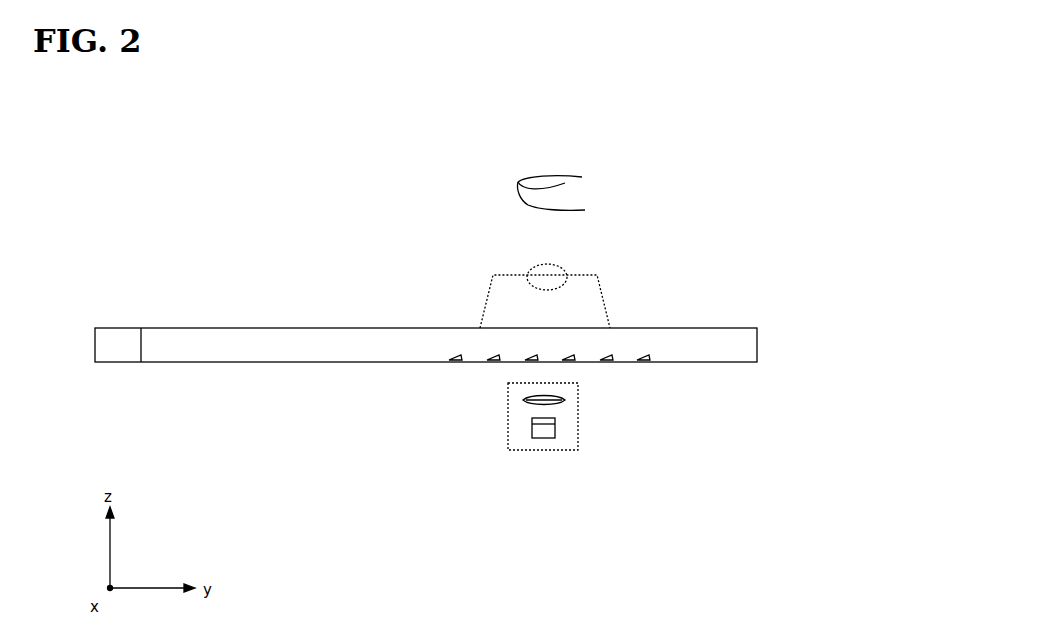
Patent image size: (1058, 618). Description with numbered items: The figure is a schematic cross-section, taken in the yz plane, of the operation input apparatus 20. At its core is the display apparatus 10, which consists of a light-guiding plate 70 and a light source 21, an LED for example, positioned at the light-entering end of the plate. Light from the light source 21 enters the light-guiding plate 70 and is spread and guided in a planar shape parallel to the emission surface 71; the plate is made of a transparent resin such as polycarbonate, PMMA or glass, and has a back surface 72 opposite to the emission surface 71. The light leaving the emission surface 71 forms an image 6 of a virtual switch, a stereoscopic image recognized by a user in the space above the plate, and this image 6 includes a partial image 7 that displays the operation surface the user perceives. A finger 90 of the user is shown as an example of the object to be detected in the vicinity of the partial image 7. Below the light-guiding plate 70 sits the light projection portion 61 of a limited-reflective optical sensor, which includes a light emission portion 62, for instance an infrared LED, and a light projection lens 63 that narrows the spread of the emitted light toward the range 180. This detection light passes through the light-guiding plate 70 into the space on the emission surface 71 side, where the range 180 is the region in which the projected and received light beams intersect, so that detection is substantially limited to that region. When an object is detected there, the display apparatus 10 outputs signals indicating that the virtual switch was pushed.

The operation input apparatus 20 is at (735, 92).
The display apparatus 10 is at (232, 328).
The light source 21 is at (108, 328).
The light-guiding plate 70 is at (757, 350).
The emission surface 71 is at (678, 328).
The back surface 72 is at (674, 362).
The image 6 is at (604, 292).
The partial image 7 is at (493, 275).
The range 180 is at (562, 270).
The finger 90 is at (578, 177).
The light projection portion 61 is at (508, 452).
The light emission portion 62 is at (556, 438).
The light projection lens 63 is at (566, 402).